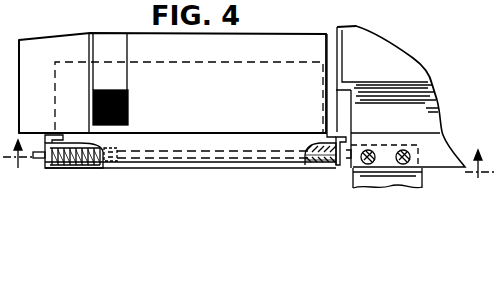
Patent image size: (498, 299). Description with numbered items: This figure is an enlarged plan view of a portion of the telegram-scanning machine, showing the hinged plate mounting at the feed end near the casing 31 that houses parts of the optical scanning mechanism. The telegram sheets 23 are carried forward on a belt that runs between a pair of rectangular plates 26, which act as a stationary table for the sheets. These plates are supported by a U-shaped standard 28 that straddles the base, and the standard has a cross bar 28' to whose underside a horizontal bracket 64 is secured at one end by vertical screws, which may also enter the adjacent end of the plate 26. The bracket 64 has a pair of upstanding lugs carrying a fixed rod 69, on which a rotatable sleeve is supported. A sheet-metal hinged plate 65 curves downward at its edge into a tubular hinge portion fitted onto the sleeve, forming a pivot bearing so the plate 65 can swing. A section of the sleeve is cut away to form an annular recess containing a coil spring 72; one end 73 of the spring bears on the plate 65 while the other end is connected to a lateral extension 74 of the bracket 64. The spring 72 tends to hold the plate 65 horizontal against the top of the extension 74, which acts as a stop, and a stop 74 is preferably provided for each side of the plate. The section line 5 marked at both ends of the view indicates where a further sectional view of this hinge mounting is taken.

The housing body 23 is at (295, 43).
The upper arm member 31 is at (382, 50).
The lower body portion 26 is at (443, 158).
The support member 28 is at (406, 181).
The support member 28' is at (13, 86).
The bracket 74 is at (52, 138).
The housing rail 64 is at (88, 168).
The spring 72 is at (68, 165).
The coupling 73 is at (117, 149).
The shaft 65 is at (190, 143).
The end cap 69 is at (324, 165).
The section line 5- 5 is at (249, 169).